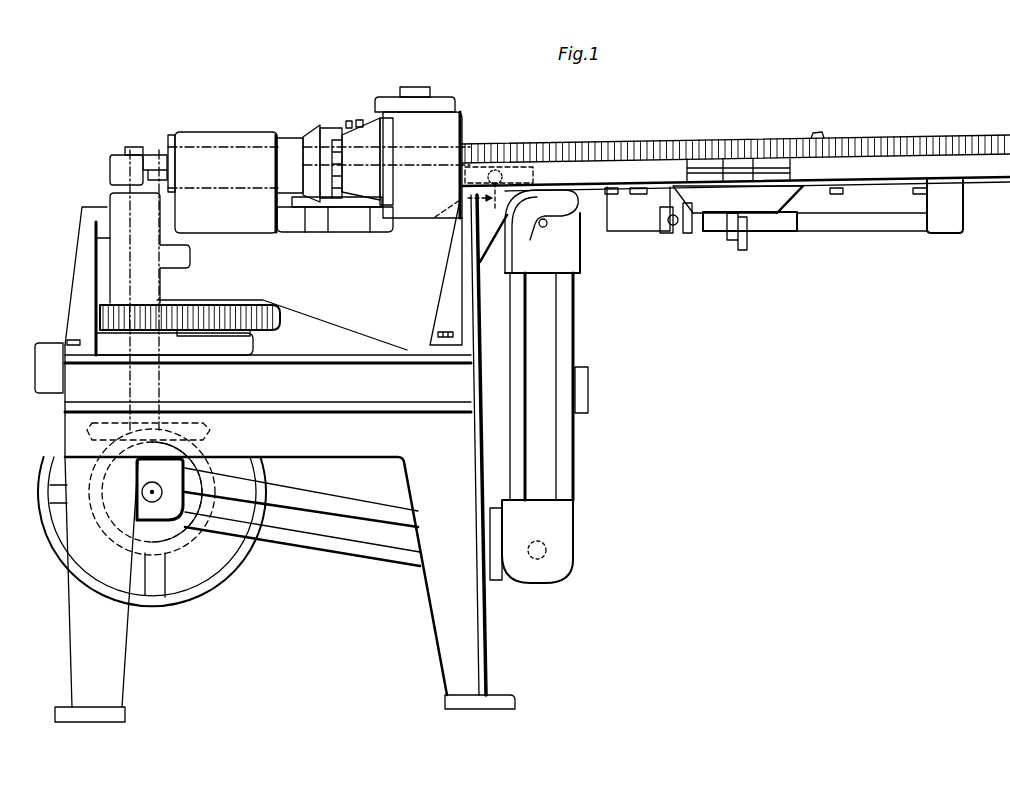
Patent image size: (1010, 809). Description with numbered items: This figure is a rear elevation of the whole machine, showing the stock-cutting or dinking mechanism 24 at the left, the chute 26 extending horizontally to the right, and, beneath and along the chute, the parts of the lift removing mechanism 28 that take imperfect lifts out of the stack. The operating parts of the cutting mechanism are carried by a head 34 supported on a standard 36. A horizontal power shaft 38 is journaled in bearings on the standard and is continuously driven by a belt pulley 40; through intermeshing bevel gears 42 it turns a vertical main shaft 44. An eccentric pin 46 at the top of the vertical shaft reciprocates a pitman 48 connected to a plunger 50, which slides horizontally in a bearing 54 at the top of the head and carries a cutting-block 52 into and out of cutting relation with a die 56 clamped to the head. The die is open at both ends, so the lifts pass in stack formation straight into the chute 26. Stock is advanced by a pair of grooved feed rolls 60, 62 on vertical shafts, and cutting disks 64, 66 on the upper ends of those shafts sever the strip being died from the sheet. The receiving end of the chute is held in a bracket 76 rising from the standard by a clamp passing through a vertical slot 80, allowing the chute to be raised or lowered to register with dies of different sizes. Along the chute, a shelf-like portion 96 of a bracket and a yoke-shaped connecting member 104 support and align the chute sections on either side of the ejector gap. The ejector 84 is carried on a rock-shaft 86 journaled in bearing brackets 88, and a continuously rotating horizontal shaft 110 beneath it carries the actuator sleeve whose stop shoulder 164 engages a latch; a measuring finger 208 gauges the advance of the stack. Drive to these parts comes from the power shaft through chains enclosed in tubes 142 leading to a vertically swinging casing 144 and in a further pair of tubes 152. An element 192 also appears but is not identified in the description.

The stock-cutting mechanism 24 is at (239, 98).
The chute 26 is at (540, 163).
The lift removing mechanism 28 is at (652, 155).
The head 34 is at (263, 277).
The standard 36 is at (311, 458).
The power shaft 38 is at (150, 500).
The belt pulley 40 is at (163, 597).
The bevel gears 42 is at (92, 442).
The vertical main shaft 44 is at (140, 285).
The eccentric pin 46 is at (126, 147).
The pitman 48 is at (110, 163).
The plunger 50 is at (283, 167).
The cutting-block 52 is at (308, 158).
The bearing 54 is at (205, 137).
The die 56 is at (355, 152).
The feed roll 60 is at (310, 212).
The feed roll 62 is at (357, 207).
The cutting disk 64 is at (322, 147).
The cutting disk 66 is at (332, 137).
The bracket 76 is at (487, 168).
The vertical slot 80 is at (475, 203).
The ejector 84 is at (743, 242).
The rock-shaft 86 is at (580, 200).
The bearing brackets 88 is at (948, 223).
The shelf-like portion 96 is at (778, 192).
The yoke-shaped connecting member 104 is at (703, 167).
The horizontal shaft 110 is at (843, 218).
The tubes 142 is at (558, 475).
The casing 144 is at (570, 248).
The tubes 152 is at (333, 505).
The stop shoulder 164 is at (693, 237).
The pawl 192 is at (662, 230).
The measuring finger 208 is at (823, 122).